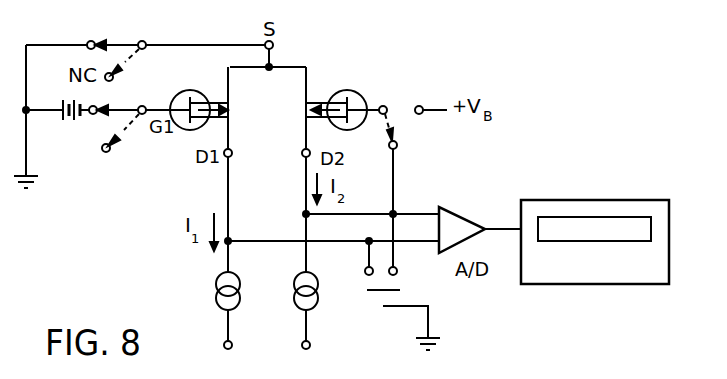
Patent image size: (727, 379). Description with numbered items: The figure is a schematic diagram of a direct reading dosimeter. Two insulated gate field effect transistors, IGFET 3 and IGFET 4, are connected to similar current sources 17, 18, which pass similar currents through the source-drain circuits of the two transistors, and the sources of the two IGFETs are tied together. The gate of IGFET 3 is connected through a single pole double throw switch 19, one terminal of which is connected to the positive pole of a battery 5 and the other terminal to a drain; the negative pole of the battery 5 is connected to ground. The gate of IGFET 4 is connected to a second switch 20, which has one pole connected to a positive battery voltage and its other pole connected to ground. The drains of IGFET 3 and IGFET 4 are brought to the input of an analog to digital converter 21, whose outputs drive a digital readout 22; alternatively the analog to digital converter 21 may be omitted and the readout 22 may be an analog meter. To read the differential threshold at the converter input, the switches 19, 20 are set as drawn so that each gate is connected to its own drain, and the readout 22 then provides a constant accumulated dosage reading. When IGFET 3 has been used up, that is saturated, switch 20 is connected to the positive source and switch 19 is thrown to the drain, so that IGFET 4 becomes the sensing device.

The battery 5 is at (70, 97).
The single pole double throw switch 19 is at (118, 113).
The IGFET 3 is at (196, 92).
The IGFET 4 is at (354, 72).
The switch 20 is at (387, 121).
The analog to digital converter 21 is at (447, 209).
The digital readout 22 is at (588, 200).
The current source 17 is at (216, 283).
The current source 18 is at (316, 300).